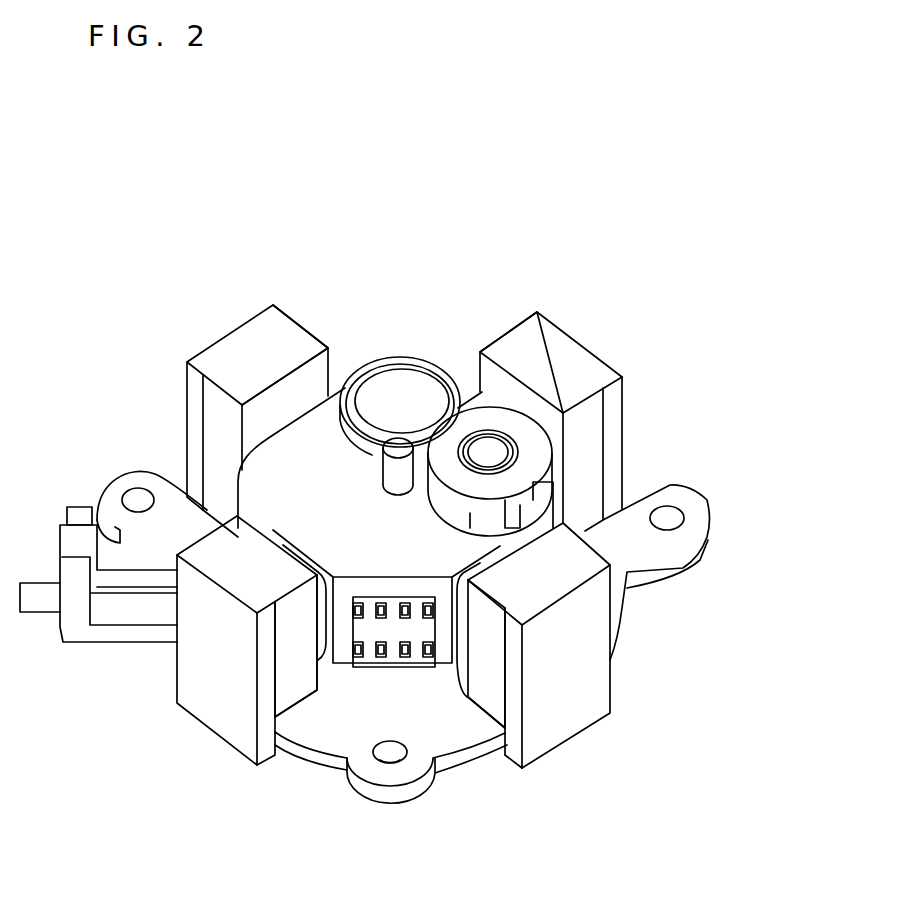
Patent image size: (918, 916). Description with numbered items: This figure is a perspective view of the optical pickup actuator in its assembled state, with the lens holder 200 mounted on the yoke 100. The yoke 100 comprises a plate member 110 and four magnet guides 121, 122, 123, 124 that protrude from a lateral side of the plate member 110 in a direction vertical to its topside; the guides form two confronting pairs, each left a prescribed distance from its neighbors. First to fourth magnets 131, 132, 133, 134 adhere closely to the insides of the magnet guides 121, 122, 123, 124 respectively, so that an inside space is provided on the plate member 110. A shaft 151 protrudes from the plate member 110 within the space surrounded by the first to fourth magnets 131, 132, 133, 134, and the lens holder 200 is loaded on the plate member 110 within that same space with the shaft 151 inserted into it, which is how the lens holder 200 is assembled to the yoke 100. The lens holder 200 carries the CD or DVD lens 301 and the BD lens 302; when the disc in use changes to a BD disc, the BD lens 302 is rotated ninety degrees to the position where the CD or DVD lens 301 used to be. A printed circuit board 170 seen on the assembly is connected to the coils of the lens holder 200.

The yoke 100 is at (633, 451).
The plate member 110 is at (465, 727).
The magnet guide 121 is at (238, 338).
The magnet guide 122 is at (207, 670).
The magnet guide 123 is at (573, 678).
The magnet guide 124 is at (570, 352).
The first magnet 131 is at (302, 345).
The second magnet 132 is at (298, 678).
The third magnet 133 is at (540, 560).
The fourth magnet 134 is at (510, 348).
The shaft 151 is at (390, 475).
The printed circuit board 170 is at (395, 667).
The lens holder 200 is at (408, 353).
The CD or DVD lens 301 is at (388, 390).
The BD lens 302 is at (515, 420).